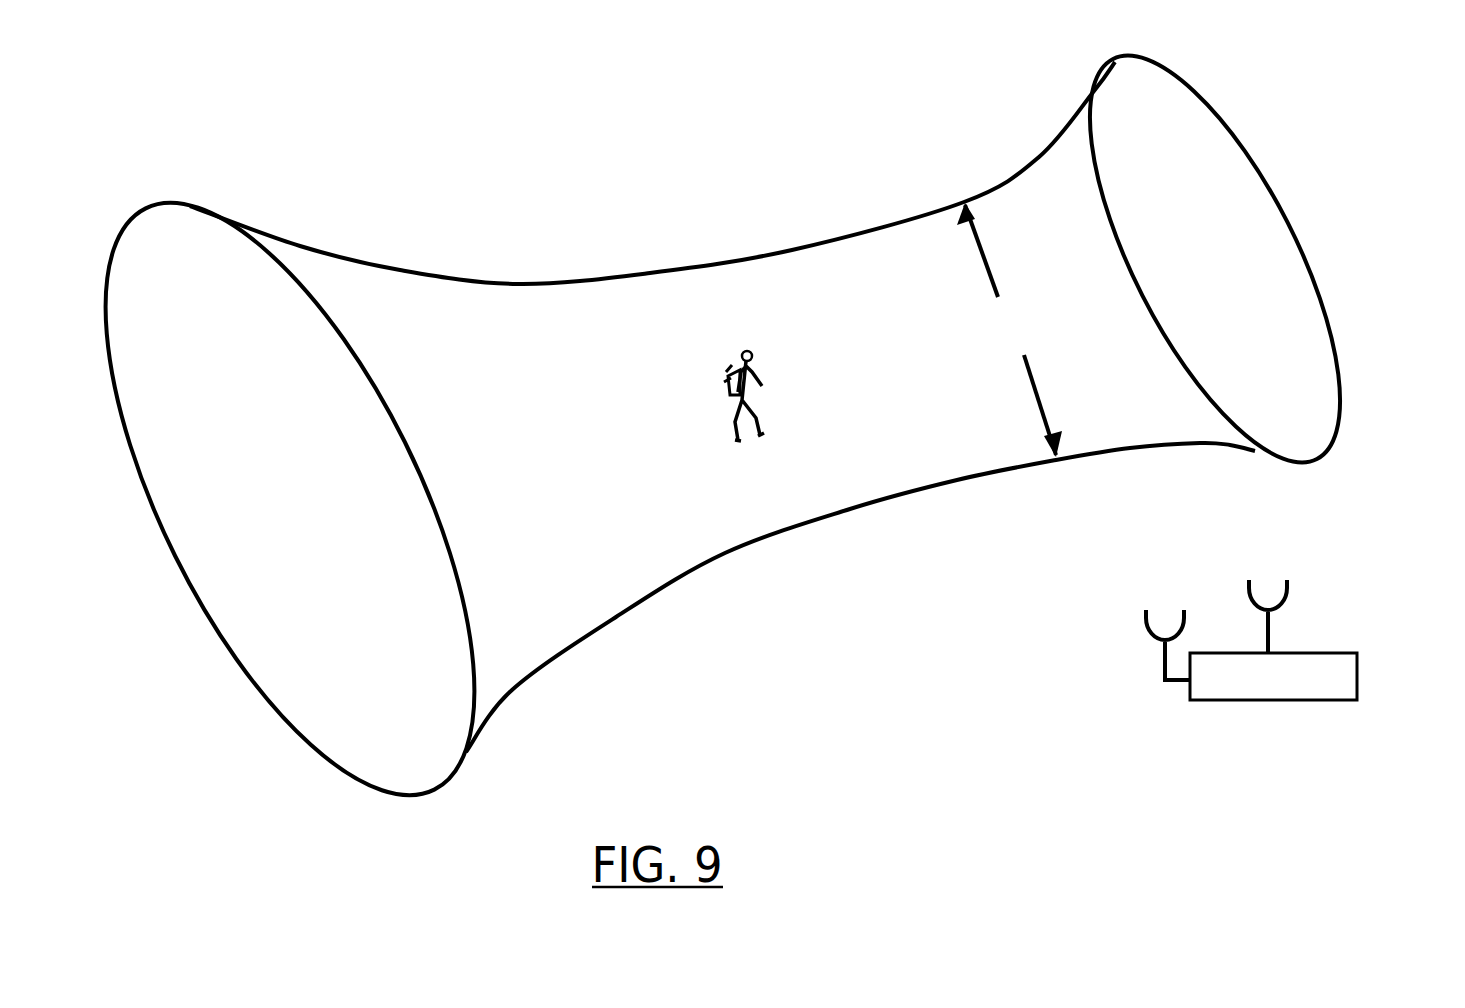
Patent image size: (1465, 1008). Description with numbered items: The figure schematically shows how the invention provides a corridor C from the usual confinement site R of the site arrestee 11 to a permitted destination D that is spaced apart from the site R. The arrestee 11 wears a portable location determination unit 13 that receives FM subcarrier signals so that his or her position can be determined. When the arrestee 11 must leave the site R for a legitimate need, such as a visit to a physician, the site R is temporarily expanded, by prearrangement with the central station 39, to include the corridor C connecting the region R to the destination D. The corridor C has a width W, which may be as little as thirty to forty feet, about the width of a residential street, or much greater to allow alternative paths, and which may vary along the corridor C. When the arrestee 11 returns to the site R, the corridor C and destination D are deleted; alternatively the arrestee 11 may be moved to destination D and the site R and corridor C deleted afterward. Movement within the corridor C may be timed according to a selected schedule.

The site arrestee 11 is at (749, 352).
The portable location determination unit 13 is at (721, 378).
The central station 39 is at (1328, 660).
The designated site R is at (217, 305).
The permitted destination D is at (1306, 388).
The corridor C is at (582, 585).
The width of corridor W is at (1009, 330).